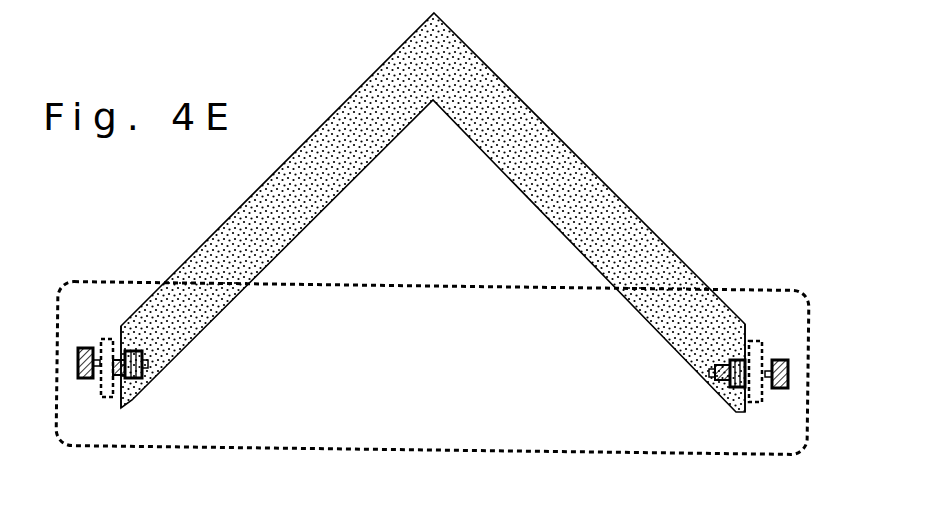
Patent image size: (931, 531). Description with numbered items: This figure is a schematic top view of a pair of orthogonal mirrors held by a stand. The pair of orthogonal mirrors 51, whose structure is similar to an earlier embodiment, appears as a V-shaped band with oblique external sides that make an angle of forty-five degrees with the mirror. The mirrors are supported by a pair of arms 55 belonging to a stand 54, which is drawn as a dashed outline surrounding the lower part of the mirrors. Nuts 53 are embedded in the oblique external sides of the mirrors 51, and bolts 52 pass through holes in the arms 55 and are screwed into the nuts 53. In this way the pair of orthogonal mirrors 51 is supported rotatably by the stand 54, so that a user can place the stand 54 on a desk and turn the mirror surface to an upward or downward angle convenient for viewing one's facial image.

The pair of orthogonal mirrors 51 is at (433, 212).
The bolts 52 is at (85, 380).
The nuts 53 is at (137, 390).
The stand 54 is at (365, 452).
The arms 55 is at (102, 339).